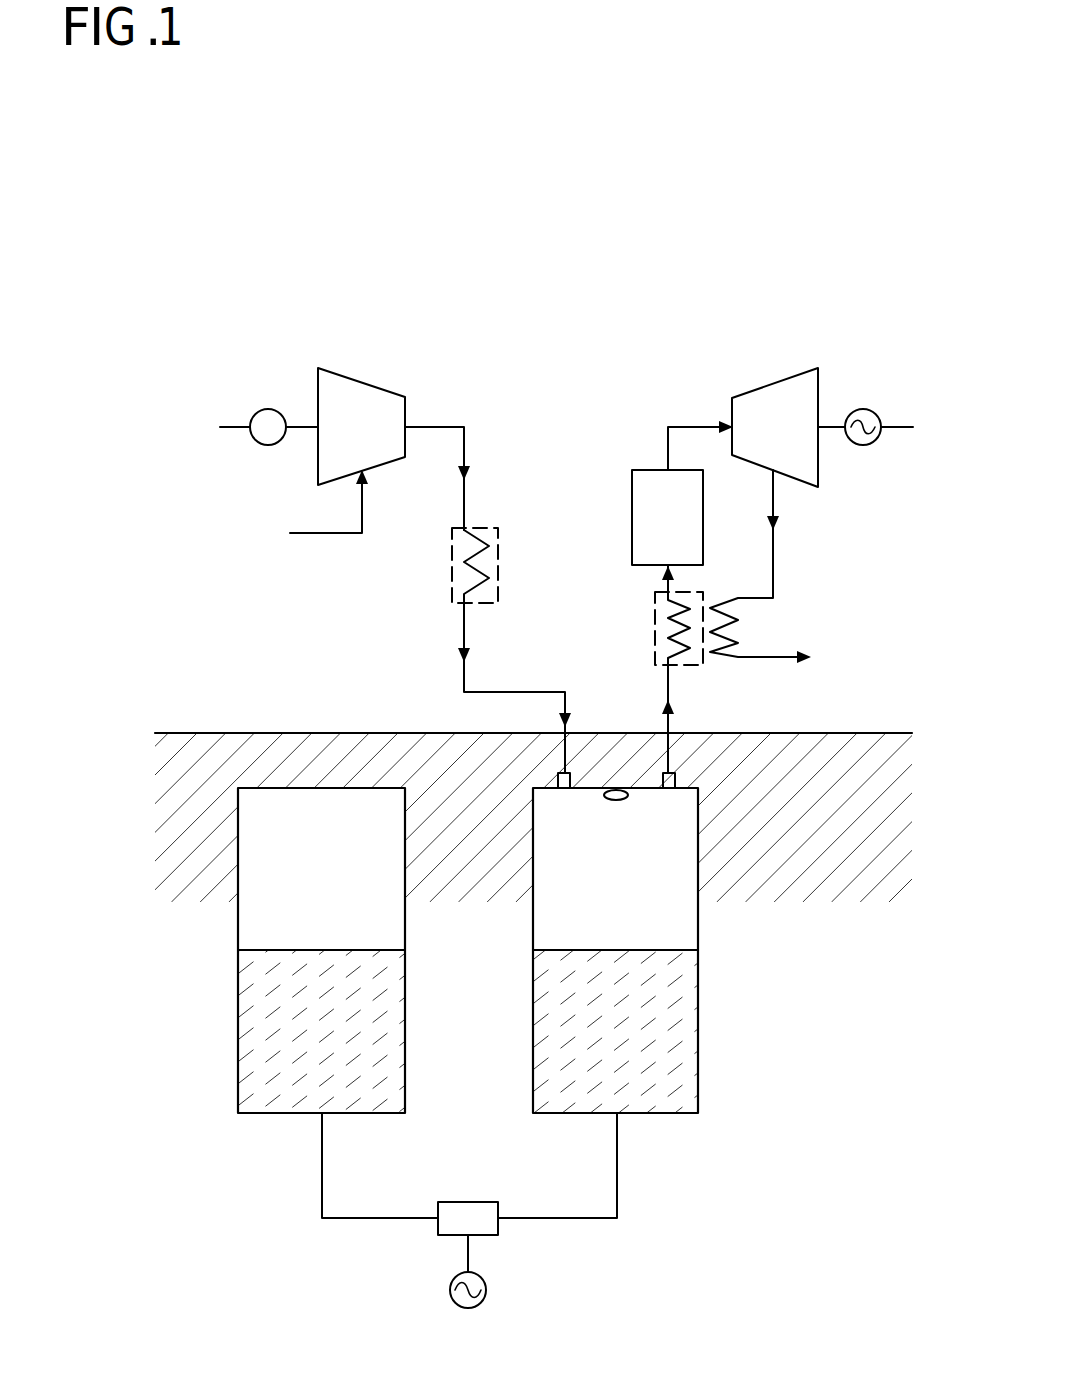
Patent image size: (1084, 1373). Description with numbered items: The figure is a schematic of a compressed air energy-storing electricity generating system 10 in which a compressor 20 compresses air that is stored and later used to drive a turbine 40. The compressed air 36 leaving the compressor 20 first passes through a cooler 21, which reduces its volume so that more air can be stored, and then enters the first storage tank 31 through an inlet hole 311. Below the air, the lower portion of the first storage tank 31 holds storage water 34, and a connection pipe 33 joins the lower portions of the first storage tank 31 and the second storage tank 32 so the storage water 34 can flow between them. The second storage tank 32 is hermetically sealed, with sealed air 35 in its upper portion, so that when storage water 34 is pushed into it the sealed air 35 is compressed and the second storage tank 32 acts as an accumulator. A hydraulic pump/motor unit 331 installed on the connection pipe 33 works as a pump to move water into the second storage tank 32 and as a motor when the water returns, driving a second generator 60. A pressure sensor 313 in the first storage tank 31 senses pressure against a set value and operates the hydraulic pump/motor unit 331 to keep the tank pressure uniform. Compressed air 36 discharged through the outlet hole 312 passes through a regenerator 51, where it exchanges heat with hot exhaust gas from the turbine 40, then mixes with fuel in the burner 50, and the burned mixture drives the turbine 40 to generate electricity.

The compressed air energy-storing electricity generating system 10 is at (577, 333).
The compressor 20 is at (371, 392).
The cooler 21 is at (452, 588).
The first storage tank 31 is at (703, 1080).
The inlet hole 311 is at (560, 771).
The outlet hole 312 is at (673, 763).
The pressure sensor 313 is at (616, 800).
The second storage tank 32 is at (234, 832).
The connection pipe 33 is at (320, 1172).
The hydraulic pump/motor unit 331 is at (488, 1238).
The storage water 34 is at (253, 1060).
The sealed air 35 is at (255, 883).
The compressed air 36 is at (675, 930).
The turbine 40 is at (774, 381).
The burner 50 is at (640, 487).
The regenerator 51 is at (650, 628).
The second generator 60 is at (450, 1277).